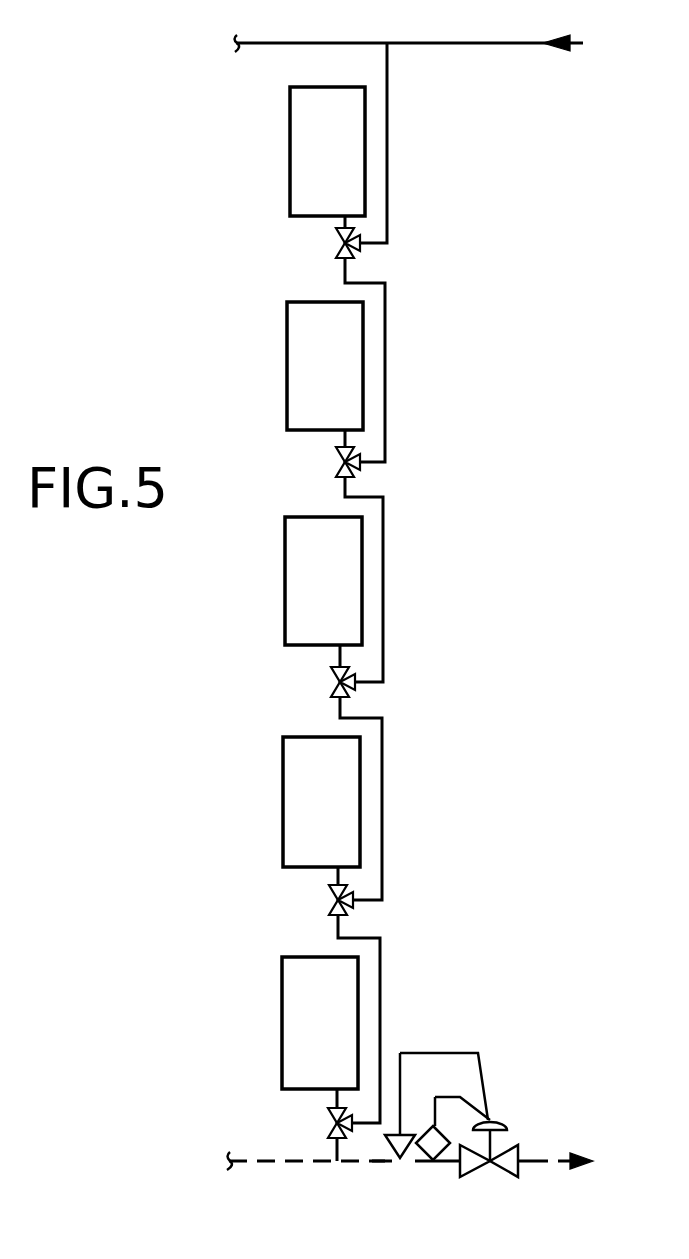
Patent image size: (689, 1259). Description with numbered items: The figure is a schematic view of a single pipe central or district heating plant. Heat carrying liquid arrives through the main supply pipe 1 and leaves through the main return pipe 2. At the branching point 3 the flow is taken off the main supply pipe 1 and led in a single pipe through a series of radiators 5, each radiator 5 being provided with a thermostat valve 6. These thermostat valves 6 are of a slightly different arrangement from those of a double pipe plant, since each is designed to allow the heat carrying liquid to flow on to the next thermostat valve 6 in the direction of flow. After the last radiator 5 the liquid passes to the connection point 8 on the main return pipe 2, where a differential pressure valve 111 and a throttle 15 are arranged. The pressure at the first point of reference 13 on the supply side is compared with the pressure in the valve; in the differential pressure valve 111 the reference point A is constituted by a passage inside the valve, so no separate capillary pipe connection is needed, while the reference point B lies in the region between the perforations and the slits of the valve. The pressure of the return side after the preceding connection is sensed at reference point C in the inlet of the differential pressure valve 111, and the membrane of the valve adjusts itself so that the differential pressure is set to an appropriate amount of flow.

The main supply pipe 1 is at (460, 43).
The main return pipe 2 is at (533, 1161).
The branching point 3 is at (392, 16).
The radiator 5 is at (298, 157).
The thermostat valve 6 is at (339, 247).
The connection point 8 is at (333, 1163).
The first point of reference 13 is at (395, 1166).
The throttle 15 is at (428, 1167).
The reference point A is at (477, 1053).
The reference point B is at (445, 1163).
The reference point C is at (380, 1162).
The differential pressure valve 111 is at (503, 1178).